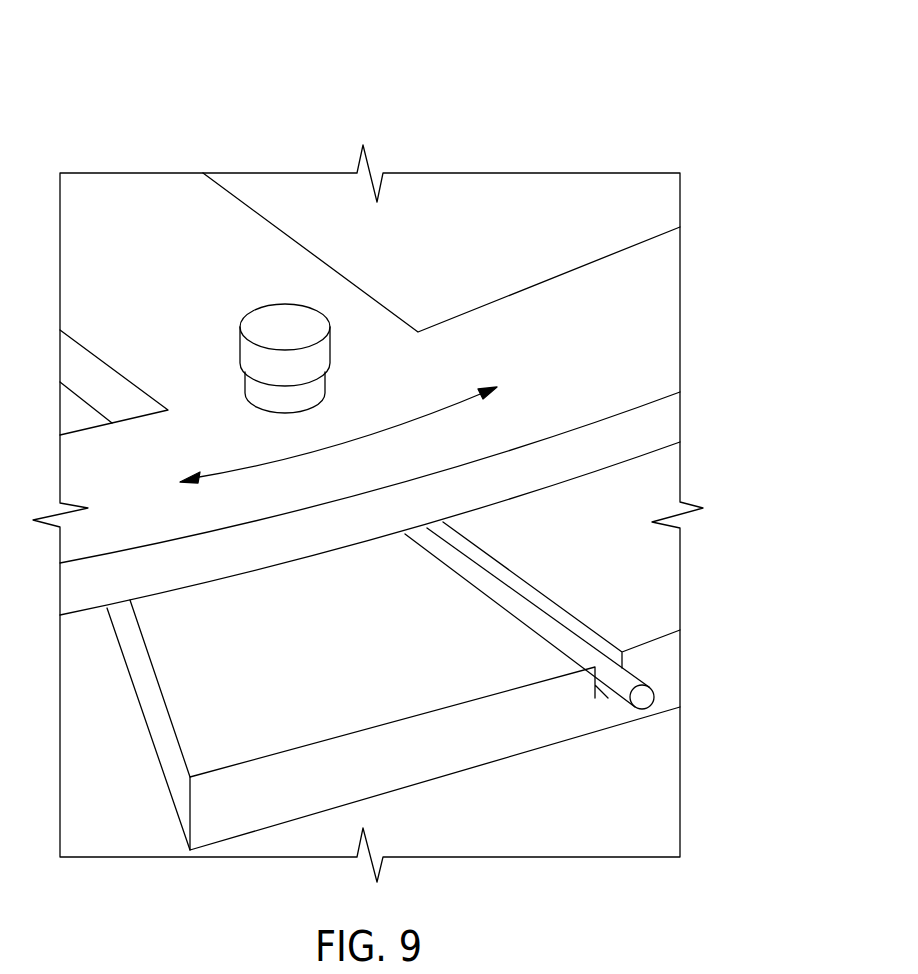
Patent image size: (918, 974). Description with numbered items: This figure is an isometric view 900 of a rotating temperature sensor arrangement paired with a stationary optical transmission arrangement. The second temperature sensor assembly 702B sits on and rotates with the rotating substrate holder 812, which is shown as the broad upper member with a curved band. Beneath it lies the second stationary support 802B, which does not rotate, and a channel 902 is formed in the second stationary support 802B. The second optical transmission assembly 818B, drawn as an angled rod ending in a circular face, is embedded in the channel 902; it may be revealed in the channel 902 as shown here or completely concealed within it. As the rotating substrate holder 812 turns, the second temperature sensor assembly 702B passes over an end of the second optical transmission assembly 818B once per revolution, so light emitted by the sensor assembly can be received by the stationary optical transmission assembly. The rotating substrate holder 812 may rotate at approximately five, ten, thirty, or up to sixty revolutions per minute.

The isometric view 900 is at (633, 121).
The rotating substrate holder 812 is at (650, 328).
The second temperature sensor assembly 702B is at (285, 303).
The second stationary support 802B is at (652, 572).
The channel 902 is at (583, 623).
The second optical transmission assembly 818B is at (645, 697).